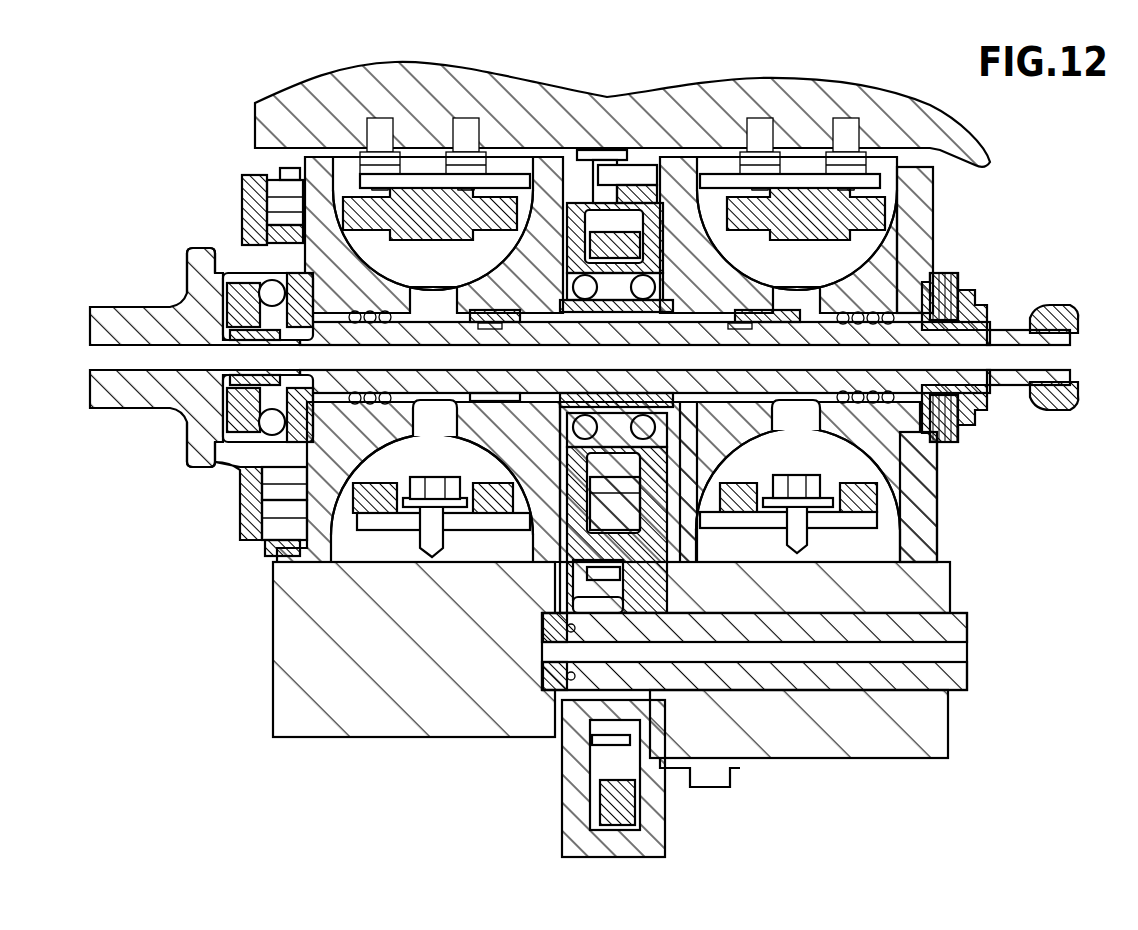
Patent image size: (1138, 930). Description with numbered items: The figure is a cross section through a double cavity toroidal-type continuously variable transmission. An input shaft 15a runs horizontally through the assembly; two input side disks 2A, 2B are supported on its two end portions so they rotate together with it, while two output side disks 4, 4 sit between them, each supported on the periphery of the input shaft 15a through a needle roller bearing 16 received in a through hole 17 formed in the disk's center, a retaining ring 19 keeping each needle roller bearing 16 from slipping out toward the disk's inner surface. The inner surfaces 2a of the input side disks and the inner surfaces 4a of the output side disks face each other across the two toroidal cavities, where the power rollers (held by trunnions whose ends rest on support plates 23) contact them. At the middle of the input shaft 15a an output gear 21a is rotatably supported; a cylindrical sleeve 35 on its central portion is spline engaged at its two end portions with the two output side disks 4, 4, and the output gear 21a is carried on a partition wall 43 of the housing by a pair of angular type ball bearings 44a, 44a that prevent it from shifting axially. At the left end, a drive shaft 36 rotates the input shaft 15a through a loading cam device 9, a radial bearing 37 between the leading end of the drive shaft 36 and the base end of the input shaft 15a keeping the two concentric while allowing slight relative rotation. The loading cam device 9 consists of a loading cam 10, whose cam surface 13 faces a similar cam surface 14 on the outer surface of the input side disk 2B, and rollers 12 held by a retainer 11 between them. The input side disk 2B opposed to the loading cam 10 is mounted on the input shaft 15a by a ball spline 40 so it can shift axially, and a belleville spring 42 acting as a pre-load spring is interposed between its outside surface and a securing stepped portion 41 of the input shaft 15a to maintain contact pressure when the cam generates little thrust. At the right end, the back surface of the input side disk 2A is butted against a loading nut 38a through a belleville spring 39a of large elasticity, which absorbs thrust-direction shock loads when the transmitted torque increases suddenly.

The input side disk 2A is at (925, 500).
The input side disk 2B is at (345, 570).
The inner surface 2a is at (352, 540).
The output side disk 4 is at (548, 168).
The inner surface 4a is at (522, 186).
The loading cam device 9 is at (270, 487).
The loading cam 10 is at (245, 530).
The retainer 11 is at (280, 172).
The roller 12 is at (270, 205).
The cam surface 13 is at (275, 508).
The cam surface 14 is at (280, 228).
The input shaft 15a is at (968, 330).
The needle roller bearing 16 is at (490, 330).
The through hole 17 is at (445, 405).
The retaining ring 19 is at (465, 316).
The output gear 21a is at (618, 250).
The support plate 23 is at (900, 210).
The sleeve 35 is at (525, 428).
The drive shaft 36 is at (105, 400).
The radial bearing 37 is at (190, 305).
The loading nut 38a is at (1000, 393).
The belleville spring 39a is at (985, 430).
The ball spline 40 is at (870, 318).
The securing stepped portion 41 is at (580, 357).
The belleville spring 42 is at (270, 453).
The partition wall 43 is at (578, 562).
The ball bearing 44a is at (580, 300).